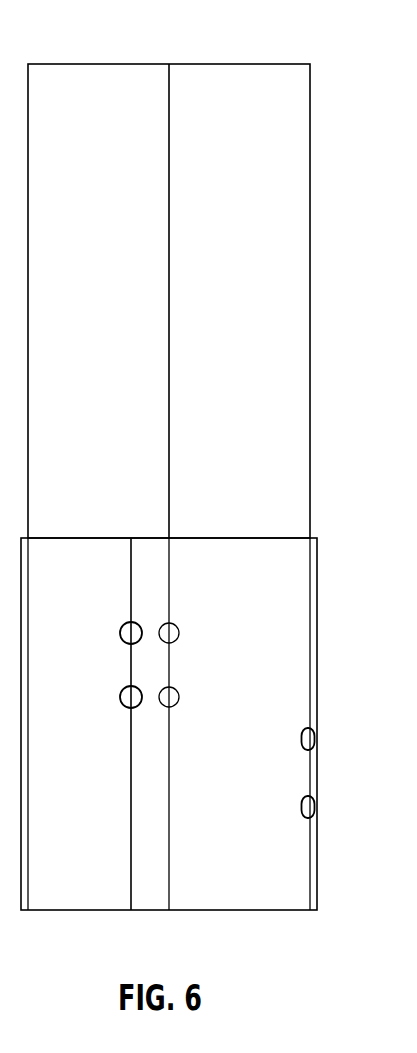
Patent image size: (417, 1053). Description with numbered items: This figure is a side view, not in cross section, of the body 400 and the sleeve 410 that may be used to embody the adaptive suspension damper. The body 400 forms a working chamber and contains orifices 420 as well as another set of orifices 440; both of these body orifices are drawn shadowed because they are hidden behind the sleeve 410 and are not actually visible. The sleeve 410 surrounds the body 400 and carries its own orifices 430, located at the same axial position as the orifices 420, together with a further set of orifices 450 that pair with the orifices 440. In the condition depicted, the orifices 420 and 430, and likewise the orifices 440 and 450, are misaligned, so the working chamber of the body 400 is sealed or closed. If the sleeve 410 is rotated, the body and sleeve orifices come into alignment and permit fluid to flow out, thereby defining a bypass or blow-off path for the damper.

The body 400 is at (227, 87).
The sleeve 410 is at (287, 565).
The orifices 420 is at (124, 705).
The orifices 430 is at (316, 746).
The orifices 440 is at (176, 641).
The orifices 450 is at (124, 641).